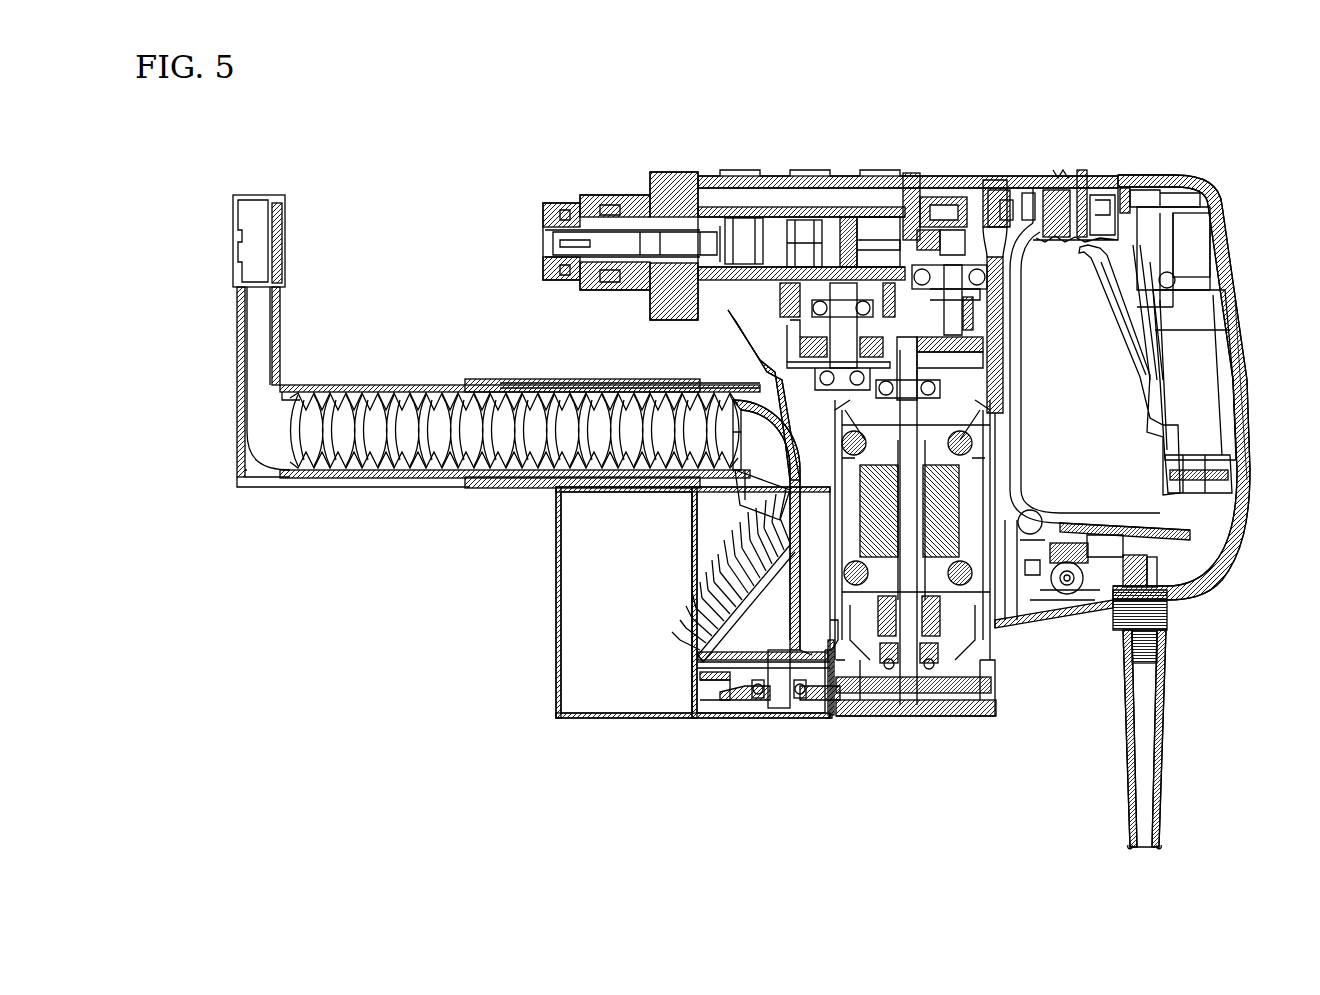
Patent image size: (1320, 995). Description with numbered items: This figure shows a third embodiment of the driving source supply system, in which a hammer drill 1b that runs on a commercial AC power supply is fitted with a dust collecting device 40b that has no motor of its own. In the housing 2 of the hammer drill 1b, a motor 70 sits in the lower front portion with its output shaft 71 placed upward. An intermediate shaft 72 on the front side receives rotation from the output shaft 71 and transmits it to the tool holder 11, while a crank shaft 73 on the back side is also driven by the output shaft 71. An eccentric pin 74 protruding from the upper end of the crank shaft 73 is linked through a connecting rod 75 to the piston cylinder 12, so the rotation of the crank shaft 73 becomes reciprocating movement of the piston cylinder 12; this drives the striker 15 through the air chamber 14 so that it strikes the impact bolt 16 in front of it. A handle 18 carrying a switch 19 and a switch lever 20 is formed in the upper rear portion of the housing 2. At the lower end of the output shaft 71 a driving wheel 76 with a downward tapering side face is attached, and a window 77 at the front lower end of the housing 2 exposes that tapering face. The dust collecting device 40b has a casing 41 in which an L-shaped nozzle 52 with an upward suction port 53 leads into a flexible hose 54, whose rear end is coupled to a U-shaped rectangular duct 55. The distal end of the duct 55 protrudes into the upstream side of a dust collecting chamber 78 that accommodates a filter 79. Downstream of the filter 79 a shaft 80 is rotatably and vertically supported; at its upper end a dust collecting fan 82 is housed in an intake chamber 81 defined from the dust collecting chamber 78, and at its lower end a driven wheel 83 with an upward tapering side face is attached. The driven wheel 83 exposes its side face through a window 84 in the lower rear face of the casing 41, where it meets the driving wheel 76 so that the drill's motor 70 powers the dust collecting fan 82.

The hammer drill 1b is at (950, 150).
The housing 2 is at (916, 176).
The tool holder 11 is at (722, 176).
The piston cylinder 12 is at (836, 207).
The air chamber 14 is at (797, 207).
The striker 15 is at (762, 207).
The impact bolt 16 is at (646, 203).
The handle 18 is at (1246, 320).
The switch 19 is at (1200, 255).
The switch lever 20 is at (1083, 255).
The dust collecting device 40b is at (508, 379).
The casing 41 is at (615, 383).
The nozzle 52 is at (365, 385).
The suction port 53 is at (268, 200).
The flexible hose 54 is at (437, 400).
The duct 55 is at (758, 490).
The motor 70 is at (960, 490).
The output shaft 71 is at (983, 355).
The intermediate shaft 72 is at (830, 340).
The crank shaft 73 is at (962, 320).
The eccentric pin 74 is at (960, 178).
The connecting rod 75 is at (873, 207).
The driving wheel 76 is at (935, 716).
The window 77 is at (840, 716).
The dust collecting chamber 78 is at (556, 632).
The filter 79 is at (715, 583).
The shaft 80 is at (779, 710).
The intake chamber 81 is at (712, 672).
The dust collecting fan 82 is at (735, 656).
The driven wheel 83 is at (745, 702).
The window 84 is at (828, 718).